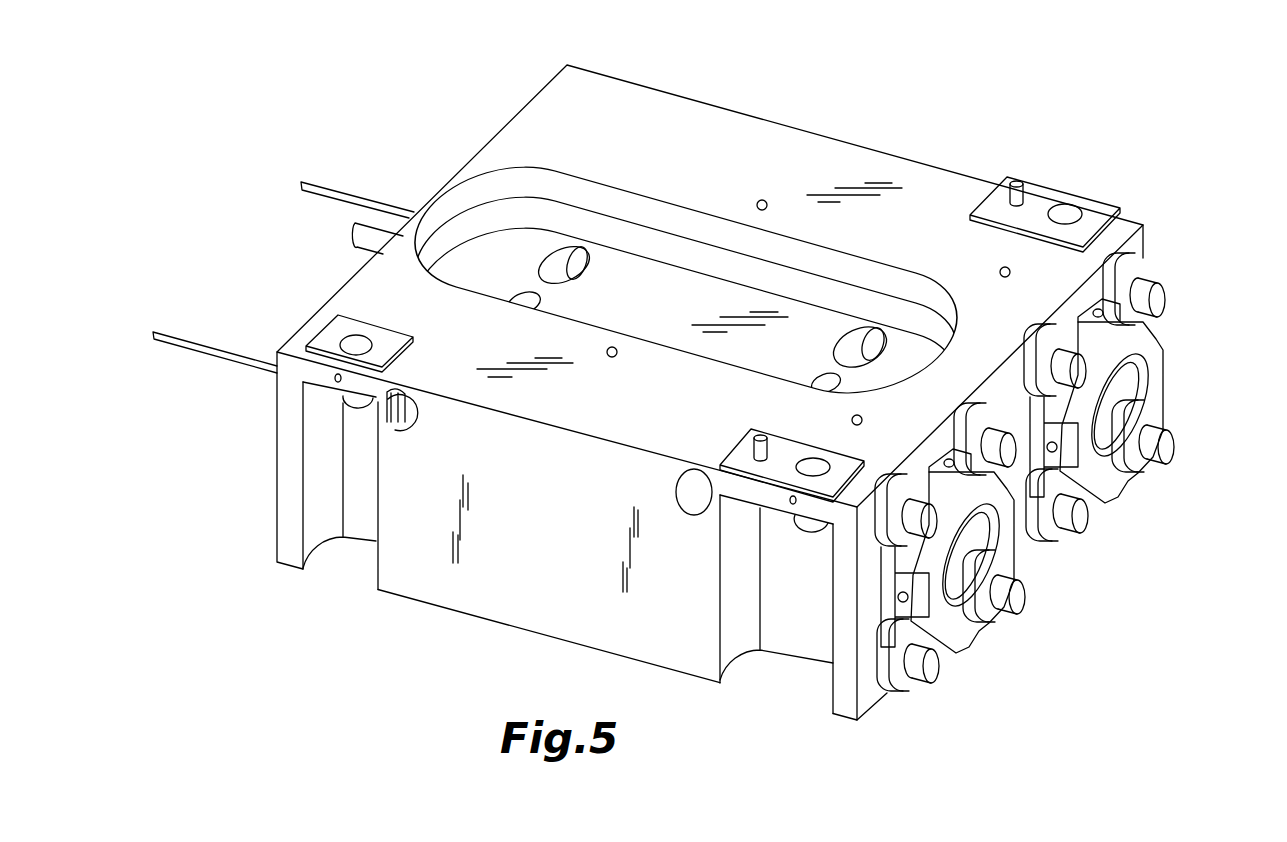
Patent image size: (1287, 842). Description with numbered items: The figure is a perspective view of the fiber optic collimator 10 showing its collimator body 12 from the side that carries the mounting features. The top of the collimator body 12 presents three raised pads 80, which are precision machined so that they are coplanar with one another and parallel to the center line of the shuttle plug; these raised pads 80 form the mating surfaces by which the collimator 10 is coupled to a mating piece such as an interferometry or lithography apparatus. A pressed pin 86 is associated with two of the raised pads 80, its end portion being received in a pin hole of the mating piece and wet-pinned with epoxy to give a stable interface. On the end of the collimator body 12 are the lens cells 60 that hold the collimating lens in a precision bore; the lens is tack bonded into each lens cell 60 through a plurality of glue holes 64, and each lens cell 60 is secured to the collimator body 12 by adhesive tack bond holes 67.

The fiber optic collimator 10 is at (1162, 172).
The collimator body 12 is at (830, 157).
The lens cell 60 is at (1155, 368).
The glue holes 64 is at (1073, 427).
The adhesive tack bond holes 67 is at (897, 553).
The raised pads 80 is at (332, 332).
The pressed pin 86 is at (1015, 178).